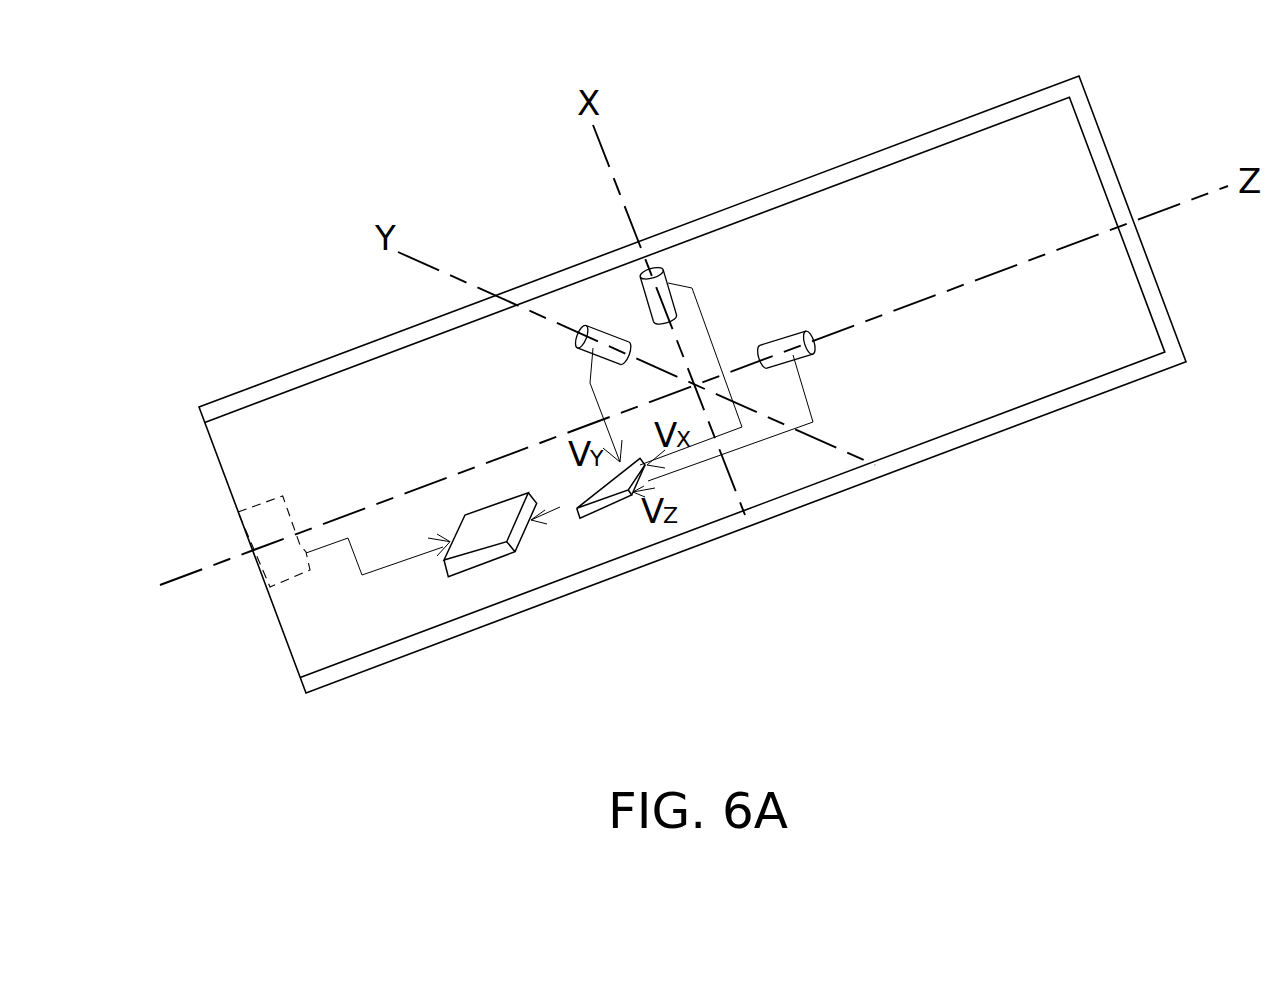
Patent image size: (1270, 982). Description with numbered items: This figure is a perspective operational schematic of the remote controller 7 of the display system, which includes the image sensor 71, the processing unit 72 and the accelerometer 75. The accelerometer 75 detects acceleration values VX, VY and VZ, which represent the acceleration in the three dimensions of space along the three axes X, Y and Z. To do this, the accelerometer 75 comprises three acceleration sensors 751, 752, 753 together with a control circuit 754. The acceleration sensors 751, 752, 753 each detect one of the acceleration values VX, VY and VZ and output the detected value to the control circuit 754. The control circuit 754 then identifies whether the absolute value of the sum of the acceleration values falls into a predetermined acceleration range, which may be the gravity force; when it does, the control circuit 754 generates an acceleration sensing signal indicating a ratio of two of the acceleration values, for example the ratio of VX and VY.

The remote controller 7 is at (1102, 129).
The image sensor 71 is at (252, 532).
The processing unit 72 is at (472, 562).
The accelerometer 75 is at (741, 487).
The acceleration sensor 751 is at (670, 278).
The acceleration sensor 752 is at (587, 352).
The acceleration sensor 753 is at (802, 352).
The control circuit 754 is at (643, 567).